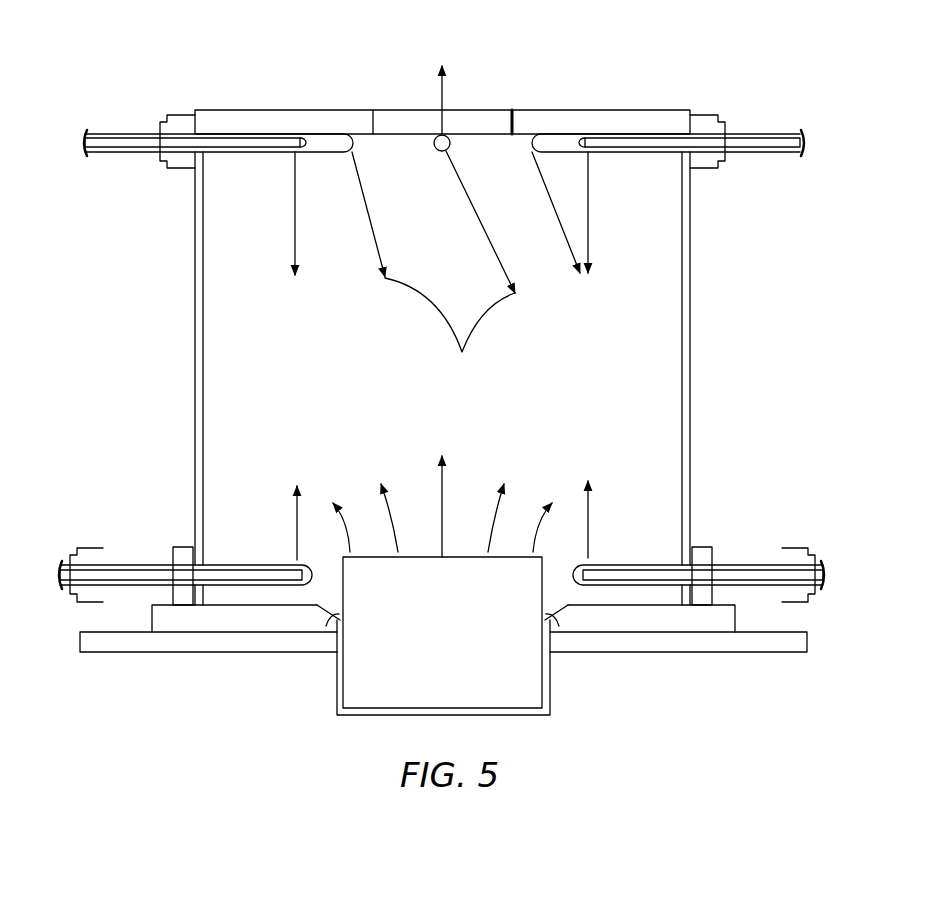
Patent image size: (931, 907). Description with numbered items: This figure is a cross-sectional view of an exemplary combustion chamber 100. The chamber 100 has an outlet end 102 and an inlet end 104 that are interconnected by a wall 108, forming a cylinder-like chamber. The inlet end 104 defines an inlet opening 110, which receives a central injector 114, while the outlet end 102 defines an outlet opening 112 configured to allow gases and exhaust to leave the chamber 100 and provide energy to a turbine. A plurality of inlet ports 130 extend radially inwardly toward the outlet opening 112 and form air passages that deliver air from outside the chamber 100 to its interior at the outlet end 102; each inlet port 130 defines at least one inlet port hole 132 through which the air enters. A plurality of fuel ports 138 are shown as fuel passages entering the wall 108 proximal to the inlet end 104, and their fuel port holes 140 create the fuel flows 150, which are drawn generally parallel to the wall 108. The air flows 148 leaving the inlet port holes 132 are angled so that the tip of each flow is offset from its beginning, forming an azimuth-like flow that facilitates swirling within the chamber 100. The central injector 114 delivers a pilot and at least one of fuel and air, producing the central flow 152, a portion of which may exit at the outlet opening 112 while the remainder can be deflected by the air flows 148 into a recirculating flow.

The combustion chamber 100 is at (784, 93).
The outlet end 102 is at (633, 122).
The inlet end 104 is at (255, 620).
The wall 108 is at (690, 318).
The inlet opening 110 is at (327, 625).
The outlet opening 112 is at (483, 120).
The central injector 114 is at (459, 626).
The inlet ports 130 is at (123, 143).
The inlet port holes 132 is at (352, 152).
The fuel ports 138 is at (138, 575).
The fuel port holes 140 is at (270, 573).
The air flows 148 is at (450, 267).
The fuel flows 150 is at (297, 485).
The central flow 152 is at (445, 456).